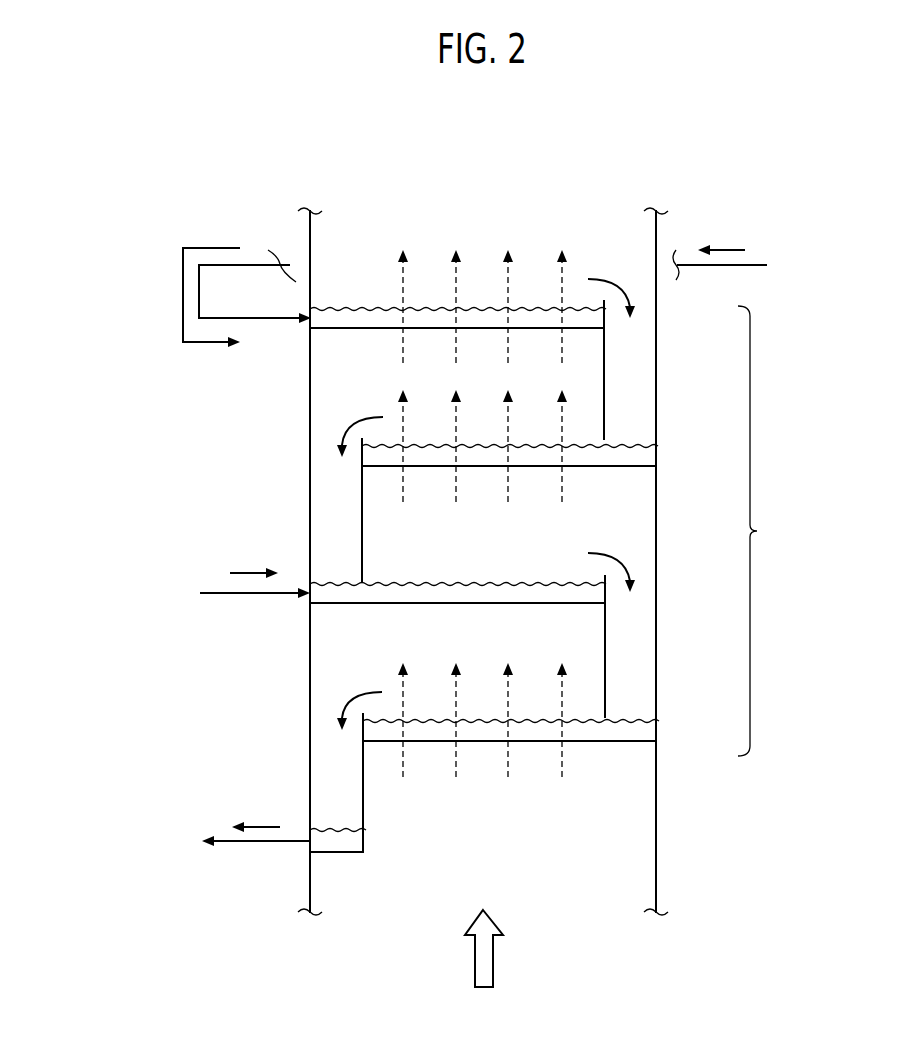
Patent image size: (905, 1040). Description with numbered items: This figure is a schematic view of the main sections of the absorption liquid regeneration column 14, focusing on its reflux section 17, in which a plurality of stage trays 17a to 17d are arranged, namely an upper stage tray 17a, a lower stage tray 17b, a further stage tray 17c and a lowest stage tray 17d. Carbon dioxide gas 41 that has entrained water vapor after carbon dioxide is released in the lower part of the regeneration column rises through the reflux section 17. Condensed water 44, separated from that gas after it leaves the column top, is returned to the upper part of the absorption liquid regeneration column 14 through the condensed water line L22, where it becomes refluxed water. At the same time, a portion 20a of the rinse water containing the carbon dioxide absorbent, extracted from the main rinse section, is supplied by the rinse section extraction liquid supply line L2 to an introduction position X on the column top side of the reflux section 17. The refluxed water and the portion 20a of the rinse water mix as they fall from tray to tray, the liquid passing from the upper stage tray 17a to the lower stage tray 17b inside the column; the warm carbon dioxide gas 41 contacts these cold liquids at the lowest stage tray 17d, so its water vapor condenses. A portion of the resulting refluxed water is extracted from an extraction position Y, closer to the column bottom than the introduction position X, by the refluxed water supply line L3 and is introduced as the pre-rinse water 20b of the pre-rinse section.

The absorption liquid regeneration column 14 is at (156, 469).
The reflux section 17 is at (763, 531).
The upper stage tray 17a is at (590, 331).
The lower stage tray 17b is at (625, 467).
The stage tray 17c is at (590, 605).
The lowest stage tray 17d is at (625, 743).
The CO2 gas 41 is at (399, 285).
The condensed water 44 is at (183, 296).
The portion of the rinse water 20a is at (248, 573).
The pre-rinse water 20b is at (255, 827).
The condensed water line L22 is at (271, 232).
The rinse section extraction liquid supply line L2 is at (251, 595).
The refluxed water supply line L3 is at (252, 843).
The introduction position X is at (312, 324).
The extraction position Y is at (312, 842).